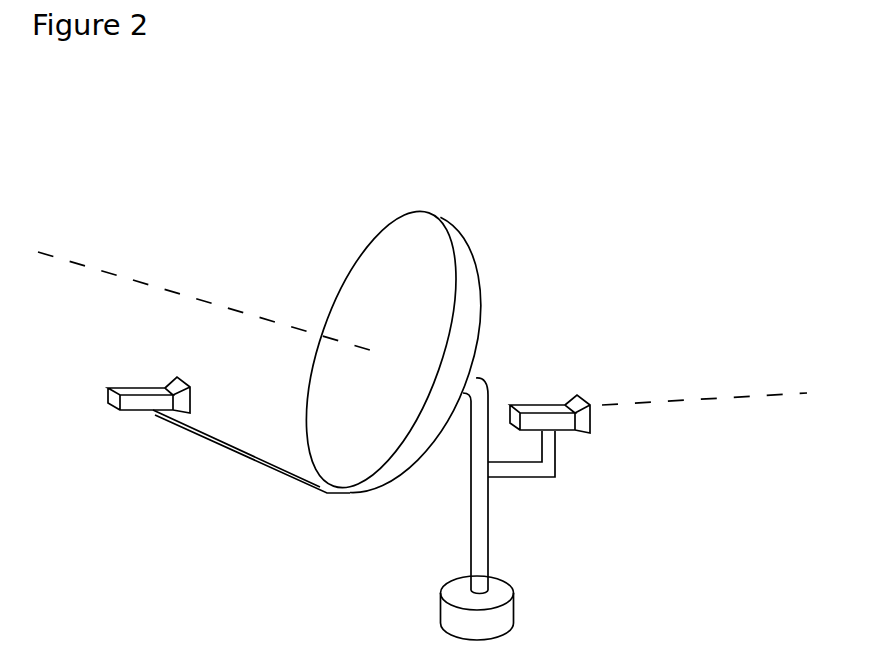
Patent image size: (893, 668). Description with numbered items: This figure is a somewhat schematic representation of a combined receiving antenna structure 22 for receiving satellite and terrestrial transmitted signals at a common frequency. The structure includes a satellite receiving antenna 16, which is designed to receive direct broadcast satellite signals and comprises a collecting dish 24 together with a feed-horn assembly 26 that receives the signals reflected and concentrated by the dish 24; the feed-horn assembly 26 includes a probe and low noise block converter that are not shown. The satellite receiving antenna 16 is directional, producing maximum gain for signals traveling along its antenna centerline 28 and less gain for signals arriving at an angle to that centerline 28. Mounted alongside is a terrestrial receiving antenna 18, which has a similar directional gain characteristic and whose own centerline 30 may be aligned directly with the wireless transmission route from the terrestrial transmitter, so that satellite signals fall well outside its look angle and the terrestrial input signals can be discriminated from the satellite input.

The satellite receiving antenna 16 is at (405, 349).
The terrestrial receiving antenna 18 is at (608, 383).
The combined receiving antenna structure 22 is at (488, 282).
The collecting dish 24 is at (442, 215).
The feed-horn assembly 26 is at (185, 400).
The antenna centerline 28 is at (168, 290).
The centerline 30 is at (710, 398).